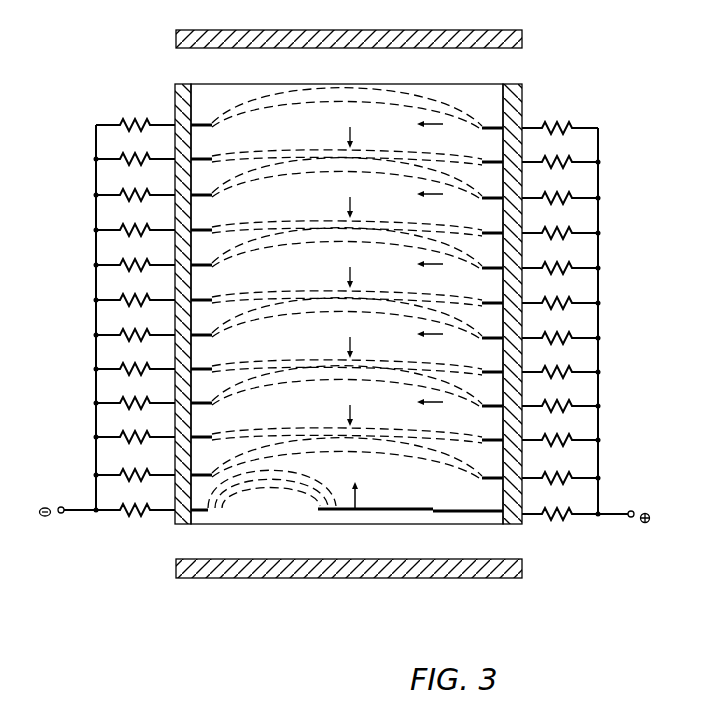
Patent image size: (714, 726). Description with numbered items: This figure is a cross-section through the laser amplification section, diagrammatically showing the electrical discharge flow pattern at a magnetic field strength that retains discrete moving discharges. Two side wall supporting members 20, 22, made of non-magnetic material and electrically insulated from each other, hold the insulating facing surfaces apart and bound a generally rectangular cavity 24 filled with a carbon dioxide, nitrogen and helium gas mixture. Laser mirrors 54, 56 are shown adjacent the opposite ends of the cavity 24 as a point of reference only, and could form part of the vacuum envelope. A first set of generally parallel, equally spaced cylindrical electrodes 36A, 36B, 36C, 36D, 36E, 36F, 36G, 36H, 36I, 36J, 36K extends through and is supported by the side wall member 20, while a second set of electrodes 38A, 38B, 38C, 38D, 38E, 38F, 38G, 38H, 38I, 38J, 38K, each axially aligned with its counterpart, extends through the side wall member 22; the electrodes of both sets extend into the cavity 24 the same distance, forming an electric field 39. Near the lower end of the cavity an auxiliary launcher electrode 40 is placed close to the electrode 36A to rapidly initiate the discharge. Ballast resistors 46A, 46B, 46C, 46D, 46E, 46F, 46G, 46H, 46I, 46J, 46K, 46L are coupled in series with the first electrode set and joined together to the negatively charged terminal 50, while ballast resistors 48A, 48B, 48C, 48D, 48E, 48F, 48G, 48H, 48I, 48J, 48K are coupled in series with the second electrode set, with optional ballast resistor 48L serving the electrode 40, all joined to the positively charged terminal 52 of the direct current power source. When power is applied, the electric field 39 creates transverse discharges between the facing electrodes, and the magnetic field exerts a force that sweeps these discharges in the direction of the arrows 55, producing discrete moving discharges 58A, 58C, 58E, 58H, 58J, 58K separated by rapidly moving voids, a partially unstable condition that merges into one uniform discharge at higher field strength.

The supporting member 20 is at (178, 90).
The supporting member 22 is at (520, 97).
The rectangular cavity 24 is at (352, 513).
The electrode 36A is at (194, 477).
The electrode 36B is at (206, 439).
The electrode 36C is at (206, 405).
The electrode 36D is at (206, 371).
The electrode 36E is at (206, 337).
The electrode 36F is at (206, 302).
The electrode 36G is at (206, 267).
The electrode 36H is at (206, 232).
The electrode 36I is at (206, 197).
The electrode 36J is at (206, 161).
The electrode 36K is at (206, 127).
The electrode 38A is at (491, 481).
The electrode 38B is at (491, 443).
The electrode 38C is at (491, 409).
The electrode 38D is at (491, 375).
The electrode 38E is at (491, 341).
The electrode 38F is at (491, 306).
The electrode 38G is at (491, 271).
The electrode 38H is at (491, 236).
The electrode 38I is at (491, 201).
The electrode 38J is at (491, 165).
The electrode 38K is at (491, 131).
The electric field 39 is at (438, 125).
The auxiliary electrode 40 is at (433, 514).
The resistor 46A is at (120, 475).
The resistor 46B is at (120, 437).
The resistor 46C is at (120, 403).
The resistor 46D is at (120, 369).
The resistor 46E is at (120, 335).
The resistor 46F is at (120, 300).
The resistor 46G is at (120, 265).
The resistor 46H is at (120, 230).
The resistor 46I is at (120, 195).
The resistor 46J is at (120, 159).
The resistor 46K is at (120, 125).
The resistor 46L is at (128, 514).
The resistor 48A is at (578, 478).
The resistor 48B is at (578, 440).
The resistor 48C is at (578, 406).
The resistor 48D is at (578, 372).
The resistor 48E is at (578, 338).
The resistor 48F is at (578, 303).
The resistor 48G is at (578, 268).
The resistor 48H is at (578, 233).
The resistor 48I is at (578, 198).
The resistor 48J is at (578, 162).
The resistor 48K is at (578, 128).
The ballast resistor 48L is at (557, 517).
The terminal 50 is at (58, 506).
The terminal 52 is at (634, 510).
The laser mirror 54 is at (396, 579).
The arrows 55 is at (348, 148).
The laser mirror 56 is at (408, 32).
The discrete discharge 58A is at (356, 423).
The discrete discharge 58C is at (356, 355).
The discrete discharge 58E is at (356, 287).
The discrete discharge 58H is at (356, 217).
The discrete discharge 58J is at (356, 147).
The discrete discharge 58K is at (380, 89).